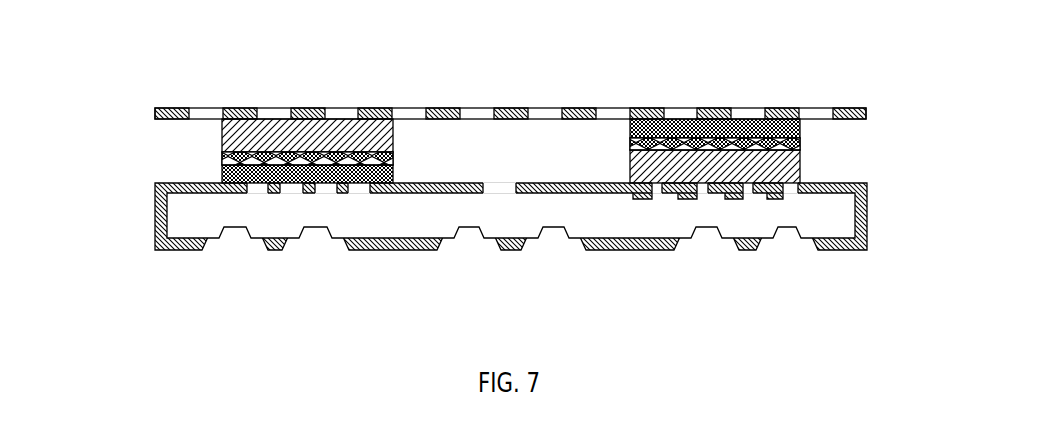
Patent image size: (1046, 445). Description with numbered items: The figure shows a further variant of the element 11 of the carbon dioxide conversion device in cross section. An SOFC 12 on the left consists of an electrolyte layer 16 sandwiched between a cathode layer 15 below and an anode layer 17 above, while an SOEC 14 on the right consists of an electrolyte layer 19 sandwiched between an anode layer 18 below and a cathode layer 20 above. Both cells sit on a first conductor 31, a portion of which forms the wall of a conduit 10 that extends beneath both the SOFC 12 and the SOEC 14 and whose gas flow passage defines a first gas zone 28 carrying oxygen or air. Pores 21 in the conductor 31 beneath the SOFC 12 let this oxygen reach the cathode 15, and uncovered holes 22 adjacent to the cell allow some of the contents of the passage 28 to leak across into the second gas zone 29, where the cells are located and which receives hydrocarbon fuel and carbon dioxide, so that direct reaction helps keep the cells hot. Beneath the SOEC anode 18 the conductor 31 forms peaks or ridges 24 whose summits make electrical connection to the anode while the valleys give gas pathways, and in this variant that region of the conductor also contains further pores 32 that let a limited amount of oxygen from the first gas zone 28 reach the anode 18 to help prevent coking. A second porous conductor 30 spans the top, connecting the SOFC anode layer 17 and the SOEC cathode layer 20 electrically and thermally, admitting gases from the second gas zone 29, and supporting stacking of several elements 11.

The conduit 10 is at (467, 247).
The element 11 is at (197, 77).
The SOFC 12 is at (218, 141).
The SOEC 14 is at (796, 146).
The cathode layer 15 is at (232, 173).
The electrolyte layer 16 is at (232, 158).
The anode layer 17 is at (232, 138).
The anode layer 18 is at (800, 162).
The electrolyte layer 19 is at (800, 143).
The cathode layer 20 is at (800, 130).
The pores 21 is at (292, 190).
The uncovered holes 22 is at (498, 188).
The peaks or ridges 24 is at (729, 193).
The first gas zone 28 is at (400, 224).
The second gas zone 29 is at (505, 158).
The second porous conductor 30 is at (512, 110).
The first conductor 31 is at (605, 188).
The further pores 32 is at (792, 187).